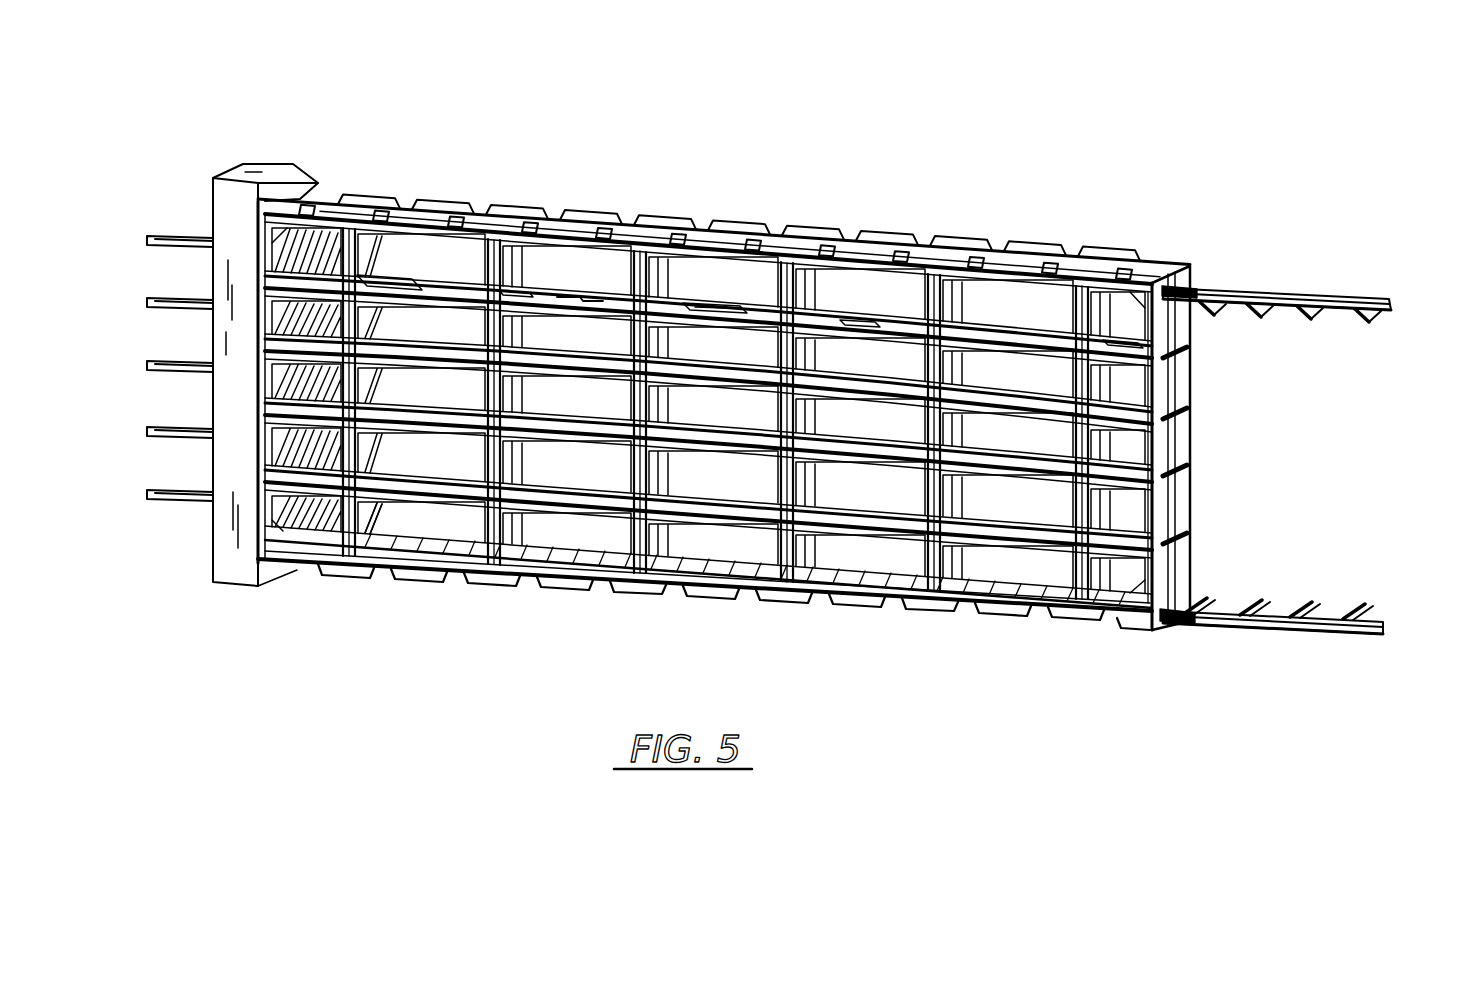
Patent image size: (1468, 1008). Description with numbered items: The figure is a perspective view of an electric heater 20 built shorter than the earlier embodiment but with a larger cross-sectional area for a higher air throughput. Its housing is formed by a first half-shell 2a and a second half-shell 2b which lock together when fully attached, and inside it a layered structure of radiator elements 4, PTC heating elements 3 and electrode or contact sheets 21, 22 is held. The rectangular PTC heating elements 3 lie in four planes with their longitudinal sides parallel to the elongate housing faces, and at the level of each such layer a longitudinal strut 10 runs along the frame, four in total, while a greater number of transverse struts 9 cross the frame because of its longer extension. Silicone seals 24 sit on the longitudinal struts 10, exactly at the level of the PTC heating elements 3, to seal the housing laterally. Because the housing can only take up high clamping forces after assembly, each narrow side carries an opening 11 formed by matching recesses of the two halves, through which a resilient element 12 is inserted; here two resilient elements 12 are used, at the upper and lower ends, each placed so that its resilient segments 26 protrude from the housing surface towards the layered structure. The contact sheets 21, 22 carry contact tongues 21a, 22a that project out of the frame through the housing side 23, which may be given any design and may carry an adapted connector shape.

The electric heater 20 is at (763, 376).
The housing side 23 is at (256, 172).
The contact tongue 22a is at (173, 238).
The contact tongue 21a is at (172, 300).
The PTC heating element 3 is at (572, 297).
The silicone seal 24 is at (703, 310).
The radiator element 4 is at (305, 545).
The transverse strut 9 is at (480, 528).
The longitudinal strut 10 is at (588, 505).
The resilient segment 26 is at (1312, 312).
The second half-shell 2b is at (1138, 630).
The first half-shell 2a is at (1192, 456).
The contact sheet 21 is at (1188, 350).
The contact sheet 22 is at (1188, 412).
The opening 11 is at (1193, 290).
The resilient element 12 is at (1338, 302).